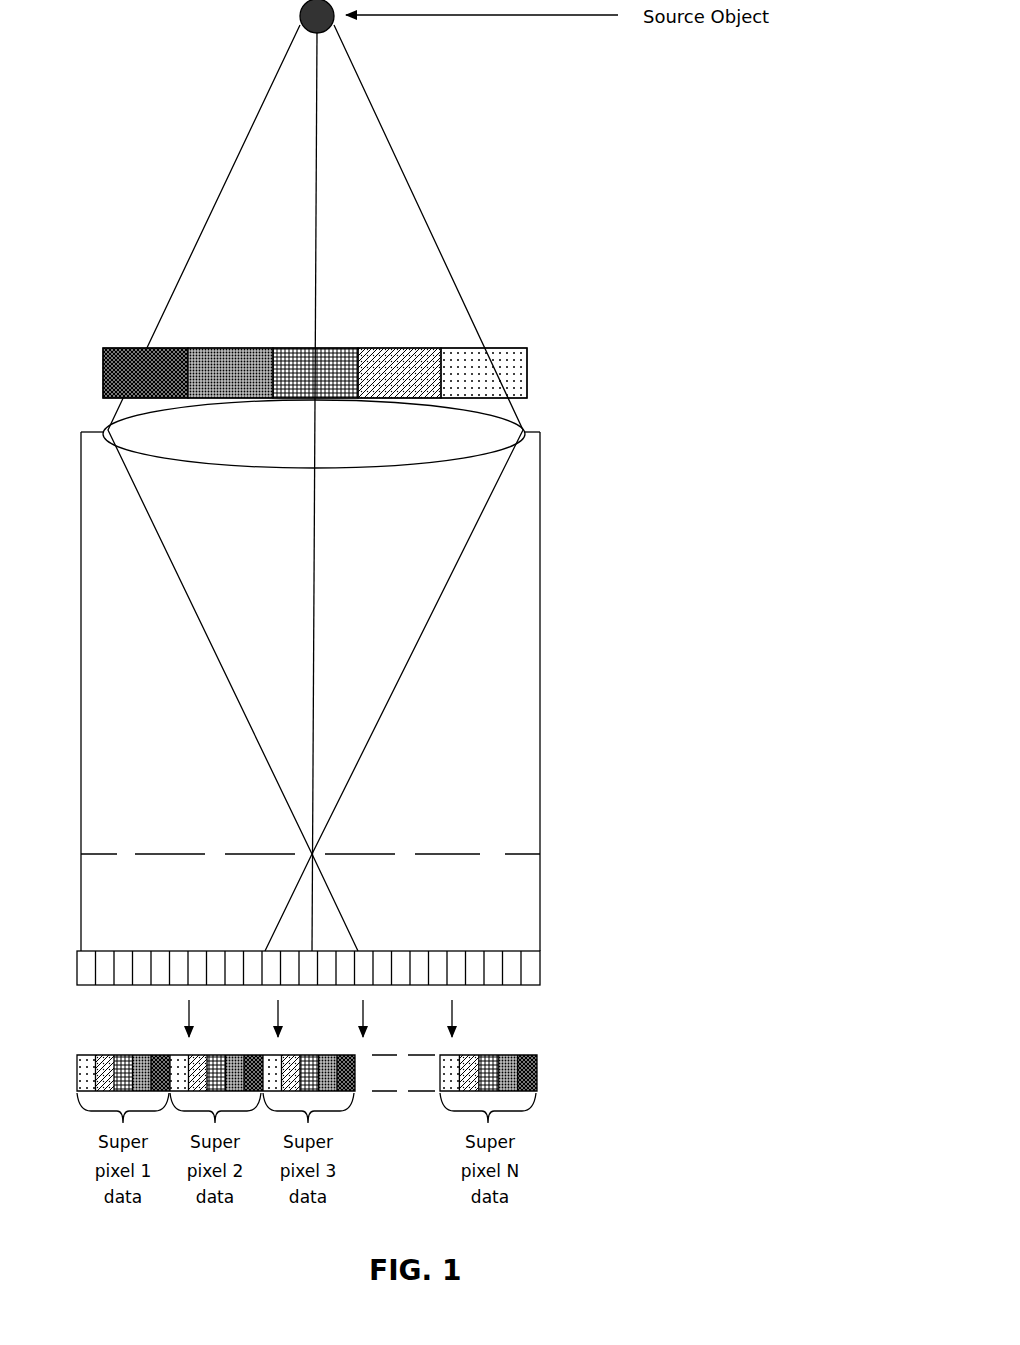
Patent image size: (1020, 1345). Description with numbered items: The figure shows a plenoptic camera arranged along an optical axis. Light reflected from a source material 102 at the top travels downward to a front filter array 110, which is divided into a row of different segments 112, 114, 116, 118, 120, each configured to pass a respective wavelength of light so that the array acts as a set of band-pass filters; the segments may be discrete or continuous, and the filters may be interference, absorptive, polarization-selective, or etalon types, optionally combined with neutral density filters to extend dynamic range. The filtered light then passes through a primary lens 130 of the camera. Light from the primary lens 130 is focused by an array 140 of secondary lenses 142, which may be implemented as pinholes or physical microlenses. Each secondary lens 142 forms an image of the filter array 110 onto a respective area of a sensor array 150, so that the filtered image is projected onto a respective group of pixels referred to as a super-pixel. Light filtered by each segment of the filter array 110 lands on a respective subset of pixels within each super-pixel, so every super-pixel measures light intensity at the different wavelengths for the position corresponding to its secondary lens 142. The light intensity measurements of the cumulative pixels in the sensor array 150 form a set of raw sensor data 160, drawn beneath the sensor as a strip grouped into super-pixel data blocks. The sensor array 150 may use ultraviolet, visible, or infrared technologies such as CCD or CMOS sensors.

The source material 102 is at (302, 22).
The front filter array 110 is at (430, 342).
The filter segment 112 is at (165, 345).
The filter segment 114 is at (242, 345).
The filter segment 116 is at (347, 345).
The filter segment 118 is at (437, 345).
The filter segment 120 is at (507, 345).
The primary lens 130 is at (543, 432).
The array of secondary lenses 140 is at (450, 834).
The secondary lens 142 is at (128, 845).
The sensor array 150 is at (543, 968).
The raw sensor data 160 is at (545, 1068).